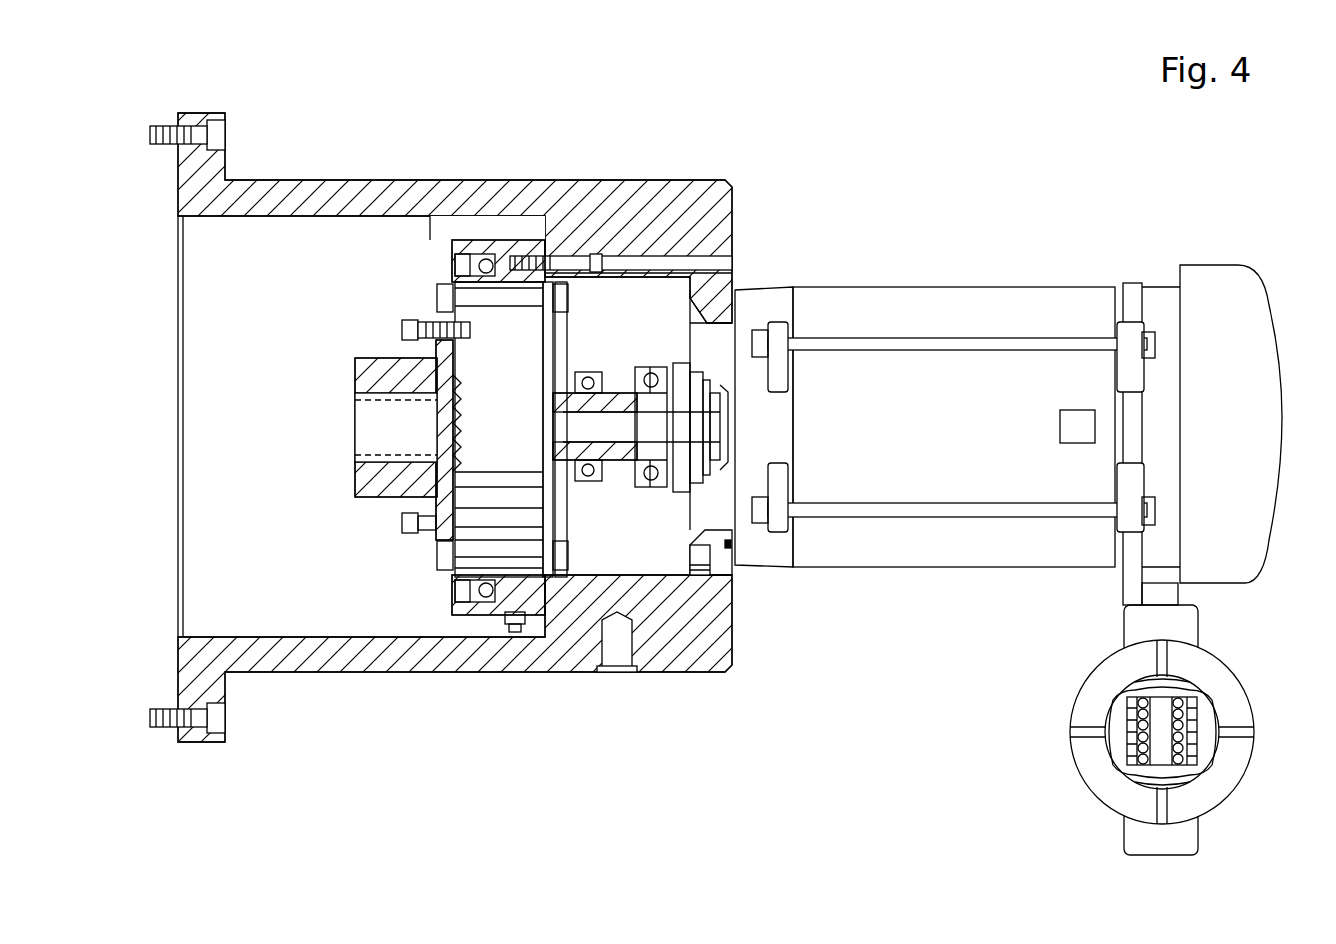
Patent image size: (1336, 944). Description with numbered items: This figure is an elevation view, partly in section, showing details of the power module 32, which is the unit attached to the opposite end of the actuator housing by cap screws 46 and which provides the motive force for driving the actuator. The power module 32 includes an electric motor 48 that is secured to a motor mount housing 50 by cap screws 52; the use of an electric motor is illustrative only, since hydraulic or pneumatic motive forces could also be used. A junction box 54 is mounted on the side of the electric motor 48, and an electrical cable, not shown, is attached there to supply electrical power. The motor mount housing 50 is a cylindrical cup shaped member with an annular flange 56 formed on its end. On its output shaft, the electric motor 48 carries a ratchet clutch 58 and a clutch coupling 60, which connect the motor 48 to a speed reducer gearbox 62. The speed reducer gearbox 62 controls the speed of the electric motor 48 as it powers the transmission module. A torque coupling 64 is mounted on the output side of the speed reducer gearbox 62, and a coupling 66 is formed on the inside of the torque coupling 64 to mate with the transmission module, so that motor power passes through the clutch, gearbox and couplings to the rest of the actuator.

The power module 32 is at (597, 78).
The cap screws 46 is at (228, 133).
The electric motor 48 is at (1039, 286).
The motor mount housing 50 is at (430, 675).
The cap screws 52 is at (690, 555).
The junction box 54 is at (1230, 667).
The annular flange 56 is at (200, 745).
The ratchet clutch 58 is at (697, 358).
The clutch coupling 60 is at (610, 395).
The speed reducer gearbox 62 is at (487, 245).
The torque coupling 64 is at (380, 356).
The coupling 66 is at (395, 405).